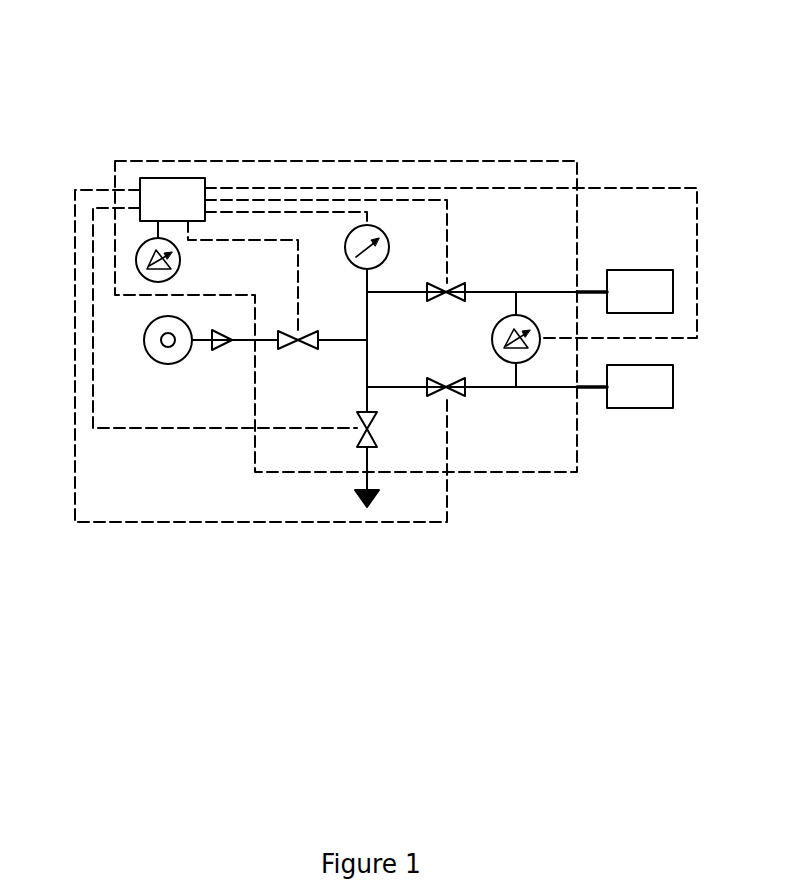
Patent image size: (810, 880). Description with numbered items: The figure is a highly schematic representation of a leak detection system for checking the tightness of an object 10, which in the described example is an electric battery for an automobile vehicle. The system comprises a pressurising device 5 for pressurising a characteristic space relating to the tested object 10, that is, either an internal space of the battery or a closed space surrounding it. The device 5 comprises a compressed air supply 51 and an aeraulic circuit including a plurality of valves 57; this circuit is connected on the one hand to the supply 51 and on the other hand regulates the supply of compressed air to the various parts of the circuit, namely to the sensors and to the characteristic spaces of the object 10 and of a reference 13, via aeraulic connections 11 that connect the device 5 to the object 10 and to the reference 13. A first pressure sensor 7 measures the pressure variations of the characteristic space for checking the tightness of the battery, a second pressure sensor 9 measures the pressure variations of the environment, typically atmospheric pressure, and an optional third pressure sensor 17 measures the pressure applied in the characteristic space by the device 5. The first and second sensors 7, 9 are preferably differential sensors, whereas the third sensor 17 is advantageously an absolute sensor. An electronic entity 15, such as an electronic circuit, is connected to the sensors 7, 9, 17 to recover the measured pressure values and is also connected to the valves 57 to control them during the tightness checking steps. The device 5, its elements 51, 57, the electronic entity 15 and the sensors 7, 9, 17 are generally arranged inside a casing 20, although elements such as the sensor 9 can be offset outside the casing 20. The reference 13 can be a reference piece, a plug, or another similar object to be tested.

The pressurising device 5 is at (410, 143).
The casing 20 is at (577, 163).
The electronic entity 15 is at (190, 178).
The second pressure sensor 9 is at (137, 249).
The compressed air supply 51 is at (186, 357).
The valves 57 is at (437, 301).
The third pressure sensor 17 is at (388, 258).
The first pressure sensor 7 is at (494, 355).
The tested object 10 is at (626, 270).
The reference 13 is at (673, 397).
The aeraulic connections 11 is at (591, 390).